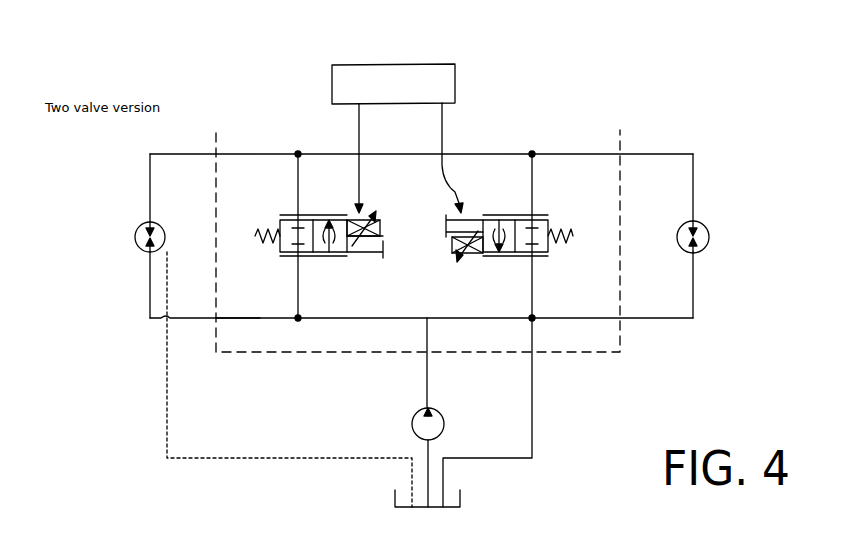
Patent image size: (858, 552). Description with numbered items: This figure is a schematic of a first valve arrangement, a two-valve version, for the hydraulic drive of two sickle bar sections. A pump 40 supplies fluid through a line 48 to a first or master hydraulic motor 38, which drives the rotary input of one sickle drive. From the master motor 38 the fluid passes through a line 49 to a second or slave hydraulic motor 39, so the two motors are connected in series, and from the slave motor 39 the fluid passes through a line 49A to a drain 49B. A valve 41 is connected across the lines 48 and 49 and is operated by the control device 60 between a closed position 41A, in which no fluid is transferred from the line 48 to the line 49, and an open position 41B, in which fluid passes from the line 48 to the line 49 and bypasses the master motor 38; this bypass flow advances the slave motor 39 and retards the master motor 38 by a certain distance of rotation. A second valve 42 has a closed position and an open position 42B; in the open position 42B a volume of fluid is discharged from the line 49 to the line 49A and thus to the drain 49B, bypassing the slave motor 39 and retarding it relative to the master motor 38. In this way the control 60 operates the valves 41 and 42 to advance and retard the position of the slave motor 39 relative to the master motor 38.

The control device 60 is at (395, 64).
The line 49 is at (282, 151).
The line 49A is at (632, 322).
The drain 49B is at (461, 503).
The line 48 is at (241, 320).
The master hydraulic motor 38 is at (146, 252).
The slave hydraulic motor 39 is at (700, 250).
The valve 41 is at (336, 257).
The closed position 41A is at (283, 212).
The open position 41B is at (348, 220).
The valve 42 is at (536, 214).
The open position 42B is at (497, 212).
The pump 40 is at (442, 424).